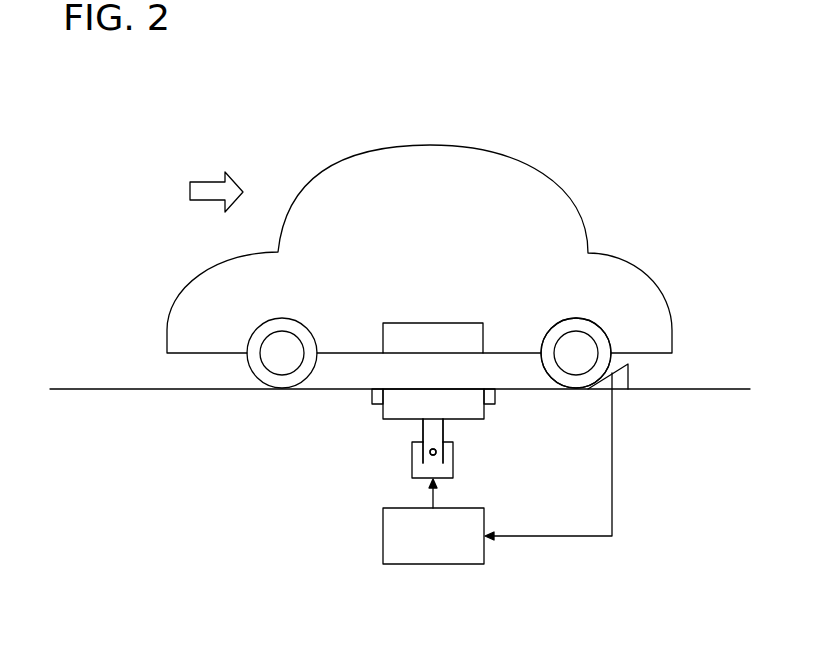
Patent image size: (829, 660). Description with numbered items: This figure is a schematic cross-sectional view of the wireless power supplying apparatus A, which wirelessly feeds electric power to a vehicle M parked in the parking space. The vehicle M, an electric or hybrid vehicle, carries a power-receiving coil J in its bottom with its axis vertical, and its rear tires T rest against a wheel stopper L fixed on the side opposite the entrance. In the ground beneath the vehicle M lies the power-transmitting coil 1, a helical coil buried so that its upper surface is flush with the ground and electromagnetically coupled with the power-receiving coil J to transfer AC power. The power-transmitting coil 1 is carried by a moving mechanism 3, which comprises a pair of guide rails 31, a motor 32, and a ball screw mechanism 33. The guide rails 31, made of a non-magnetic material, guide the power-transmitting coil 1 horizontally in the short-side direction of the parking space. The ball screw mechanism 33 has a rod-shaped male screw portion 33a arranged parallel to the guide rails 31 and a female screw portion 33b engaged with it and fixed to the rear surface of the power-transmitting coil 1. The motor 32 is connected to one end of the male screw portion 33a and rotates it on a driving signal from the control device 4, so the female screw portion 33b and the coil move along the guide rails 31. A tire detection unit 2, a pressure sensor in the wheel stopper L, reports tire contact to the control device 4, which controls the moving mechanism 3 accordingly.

The power-transmitting coil 1 is at (382, 415).
The tire detection unit 2 is at (597, 390).
The moving mechanism 3 is at (250, 431).
The control device 4 is at (435, 566).
The guide rails 31 is at (370, 397).
The motor 32 is at (455, 462).
The ball screw mechanism 33 is at (421, 430).
The male screw portion 33a is at (433, 452).
The female screw portion 33b is at (433, 430).
The vehicle M is at (435, 145).
The power-receiving coil J is at (435, 323).
The tires T is at (574, 318).
The wireless power supplying apparatus A is at (248, 566).
The wheel stopper L is at (630, 374).